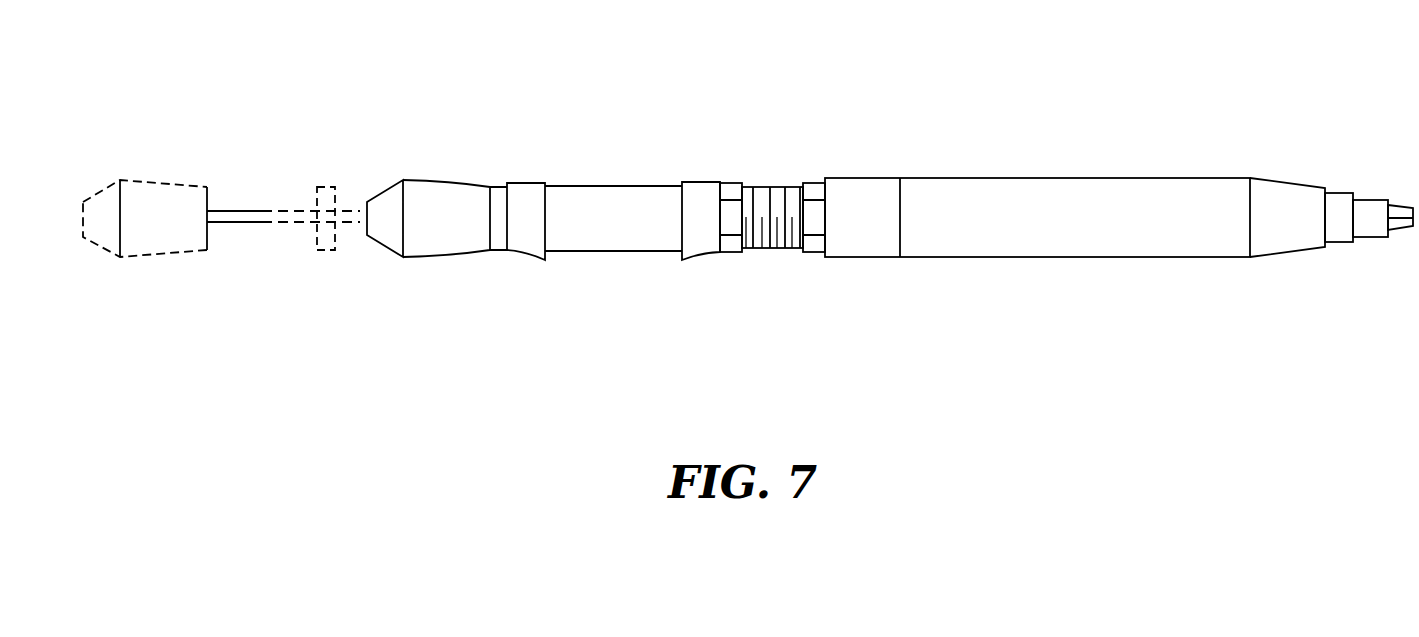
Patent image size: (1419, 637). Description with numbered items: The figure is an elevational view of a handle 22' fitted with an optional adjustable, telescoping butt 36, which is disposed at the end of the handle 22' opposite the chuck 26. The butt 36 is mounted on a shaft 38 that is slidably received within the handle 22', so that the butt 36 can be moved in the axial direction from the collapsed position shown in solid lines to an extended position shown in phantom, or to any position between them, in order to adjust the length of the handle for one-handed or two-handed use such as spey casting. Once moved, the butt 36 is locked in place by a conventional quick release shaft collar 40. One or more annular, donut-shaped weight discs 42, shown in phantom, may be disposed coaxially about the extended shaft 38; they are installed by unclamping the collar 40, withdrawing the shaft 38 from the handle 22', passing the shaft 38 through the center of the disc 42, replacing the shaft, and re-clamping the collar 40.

The telescoping butt 36 is at (748, 200).
The shaft 38 is at (262, 222).
The annular disc 42 is at (333, 250).
The quick release shaft collar 40 is at (497, 250).
The handle 22' is at (1075, 189).
The chuck 26 is at (1400, 207).